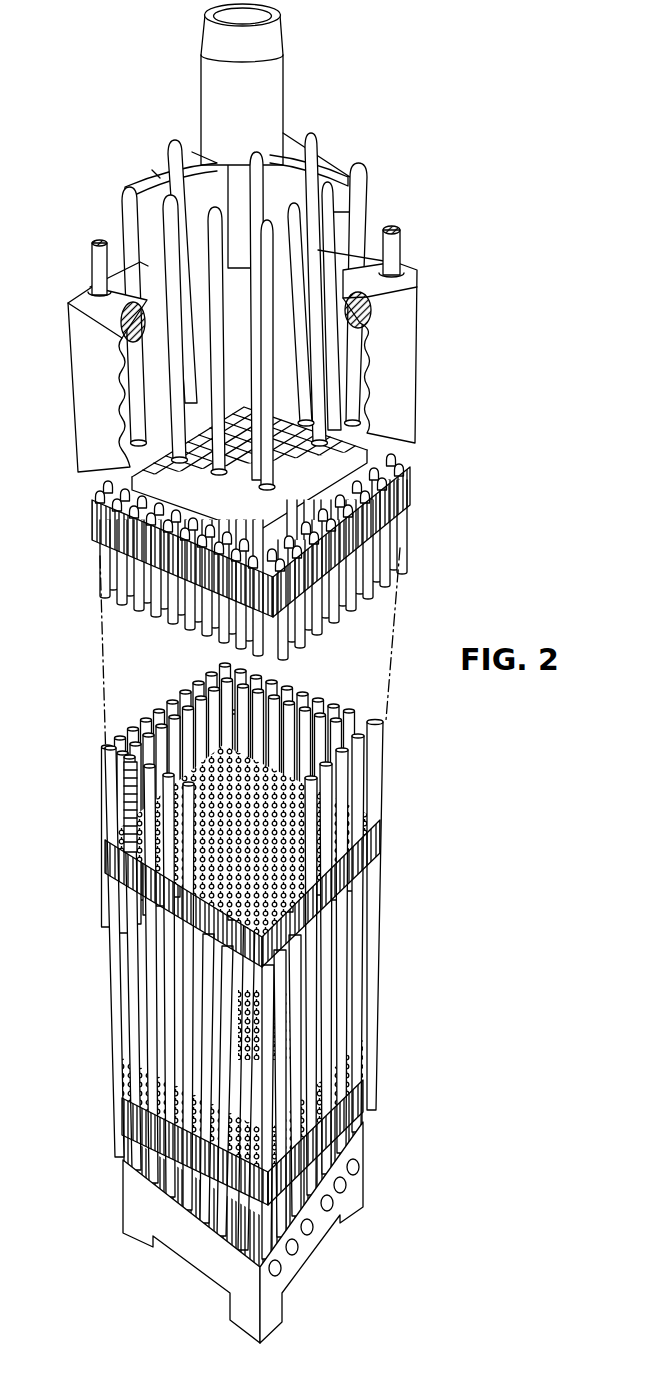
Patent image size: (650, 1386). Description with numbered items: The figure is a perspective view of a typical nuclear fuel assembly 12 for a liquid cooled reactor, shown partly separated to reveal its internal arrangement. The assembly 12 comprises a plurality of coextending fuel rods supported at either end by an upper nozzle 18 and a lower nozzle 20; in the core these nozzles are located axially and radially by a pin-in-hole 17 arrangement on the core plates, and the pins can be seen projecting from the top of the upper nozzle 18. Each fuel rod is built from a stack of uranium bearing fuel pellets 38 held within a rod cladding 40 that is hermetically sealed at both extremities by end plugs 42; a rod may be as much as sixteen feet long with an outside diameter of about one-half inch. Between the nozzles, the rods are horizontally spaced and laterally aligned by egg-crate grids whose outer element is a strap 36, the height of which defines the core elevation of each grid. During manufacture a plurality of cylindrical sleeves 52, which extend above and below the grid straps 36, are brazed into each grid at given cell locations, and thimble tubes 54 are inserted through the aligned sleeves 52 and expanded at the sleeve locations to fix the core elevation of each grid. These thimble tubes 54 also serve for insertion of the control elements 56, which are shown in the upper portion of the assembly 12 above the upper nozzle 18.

The fuel assembly 12 is at (55, 670).
The pin-in-hole configuration 17 is at (395, 263).
The upper nozzle 18 is at (400, 372).
The lower nozzle 20 is at (363, 1135).
The outer strap 36 is at (375, 857).
The fuel pellets 38 is at (118, 800).
The rod cladding 40 is at (112, 765).
The end plugs 42 is at (386, 477).
The cylindrical sleeves 52 is at (153, 582).
The thimble tubes 54 is at (157, 602).
The control elements 56 is at (326, 254).